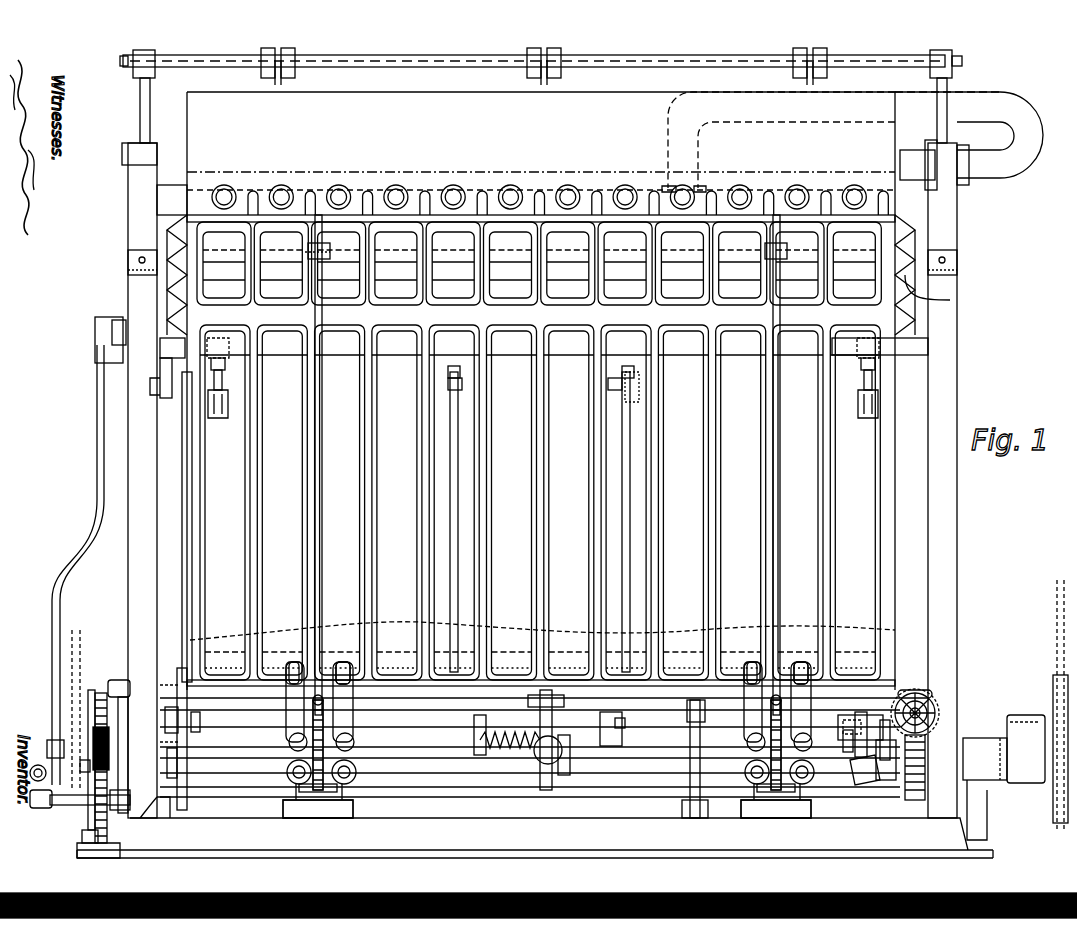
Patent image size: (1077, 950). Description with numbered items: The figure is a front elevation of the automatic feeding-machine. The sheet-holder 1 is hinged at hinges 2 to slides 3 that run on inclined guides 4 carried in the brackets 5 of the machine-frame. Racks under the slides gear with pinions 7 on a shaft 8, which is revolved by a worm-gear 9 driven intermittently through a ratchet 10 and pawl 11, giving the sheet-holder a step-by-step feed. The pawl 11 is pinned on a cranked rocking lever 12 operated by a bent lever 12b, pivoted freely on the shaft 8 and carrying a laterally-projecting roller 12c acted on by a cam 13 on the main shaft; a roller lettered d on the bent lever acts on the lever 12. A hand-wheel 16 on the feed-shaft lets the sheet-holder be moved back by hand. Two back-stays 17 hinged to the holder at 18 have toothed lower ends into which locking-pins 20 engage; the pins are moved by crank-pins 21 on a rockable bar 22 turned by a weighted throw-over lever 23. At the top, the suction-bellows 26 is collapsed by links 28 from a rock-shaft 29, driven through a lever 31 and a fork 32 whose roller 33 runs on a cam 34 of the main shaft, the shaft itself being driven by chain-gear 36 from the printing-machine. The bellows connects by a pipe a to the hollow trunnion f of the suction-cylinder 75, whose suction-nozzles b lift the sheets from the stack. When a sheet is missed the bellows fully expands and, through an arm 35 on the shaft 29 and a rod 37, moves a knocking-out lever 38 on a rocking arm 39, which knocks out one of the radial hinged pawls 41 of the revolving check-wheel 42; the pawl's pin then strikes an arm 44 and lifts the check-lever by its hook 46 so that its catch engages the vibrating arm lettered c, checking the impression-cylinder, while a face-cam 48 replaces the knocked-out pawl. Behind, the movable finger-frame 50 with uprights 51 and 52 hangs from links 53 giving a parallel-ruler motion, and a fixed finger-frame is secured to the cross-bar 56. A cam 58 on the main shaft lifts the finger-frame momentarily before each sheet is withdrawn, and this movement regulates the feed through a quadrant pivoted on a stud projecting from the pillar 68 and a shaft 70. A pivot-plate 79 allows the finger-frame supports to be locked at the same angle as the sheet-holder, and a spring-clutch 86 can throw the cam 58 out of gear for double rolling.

The sheet-holder 1 is at (900, 232).
The hinge 2 is at (311, 670).
The slide 3 is at (286, 710).
The inclined guide 4 is at (300, 752).
The bracket 5 is at (346, 802).
The pinion 7 is at (318, 797).
The shaft 8 is at (420, 762).
The worm-gear 9 is at (915, 800).
The ratchet 10 is at (935, 708).
The pawl 11 is at (925, 690).
The cranked rocking lever 12 is at (886, 782).
The bent lever 12b is at (870, 777).
The laterally-projecting roller 12c is at (870, 712).
The cam 13 is at (848, 754).
The hand-wheel 16 is at (945, 737).
The back-stay 17 is at (322, 562).
The hinge 18 is at (322, 243).
The locking-pin 20 is at (313, 703).
The crank-pin 21 is at (326, 660).
The rockable bar 22 is at (398, 698).
The weighted throw-over lever 23 is at (548, 792).
The suction-bellows 26 is at (170, 212).
The link 28 is at (226, 394).
The rock-shaft 29 is at (920, 348).
The lever 31 is at (187, 522).
The fork 32 is at (178, 732).
The roller 33 is at (179, 810).
The cam 34 is at (158, 804).
The arm 35 is at (115, 320).
The chain-gear 36 is at (1053, 692).
The rod 37 is at (80, 542).
The knocking-out lever 38 is at (55, 742).
The rocking arm 39 is at (40, 808).
The radial hinged pawl 41 is at (98, 695).
The check-wheel 42 is at (95, 825).
The arm 44 is at (118, 680).
The hook 46 is at (108, 730).
The face-cam 48 is at (95, 748).
The finger-frame 50 is at (232, 640).
The upright 51 is at (450, 472).
The upright 52 is at (632, 482).
The link 53 is at (462, 387).
The cross-bar 56 is at (955, 300).
The cam 58 is at (556, 777).
The pillar 68 is at (696, 772).
The shaft 70 is at (850, 708).
The suction-cylinder 75 is at (541, 93).
The pivot-plate 79 is at (620, 747).
The spring-clutch 86 is at (482, 757).
The pipe a is at (1015, 112).
The suction-nozzle b is at (282, 195).
The line c is at (163, 739).
The line d is at (162, 682).
The hollow trunnion f is at (905, 167).